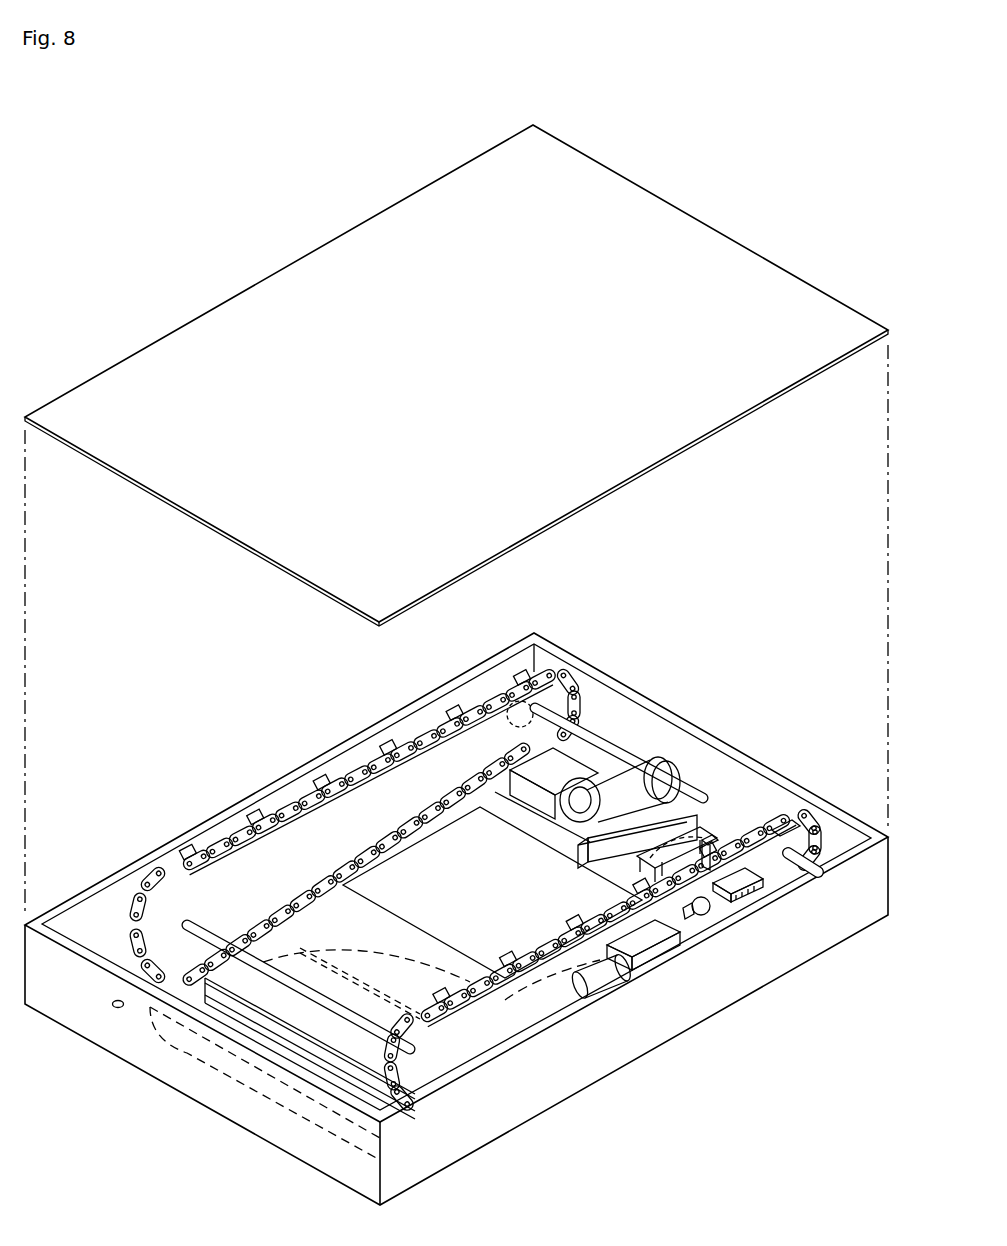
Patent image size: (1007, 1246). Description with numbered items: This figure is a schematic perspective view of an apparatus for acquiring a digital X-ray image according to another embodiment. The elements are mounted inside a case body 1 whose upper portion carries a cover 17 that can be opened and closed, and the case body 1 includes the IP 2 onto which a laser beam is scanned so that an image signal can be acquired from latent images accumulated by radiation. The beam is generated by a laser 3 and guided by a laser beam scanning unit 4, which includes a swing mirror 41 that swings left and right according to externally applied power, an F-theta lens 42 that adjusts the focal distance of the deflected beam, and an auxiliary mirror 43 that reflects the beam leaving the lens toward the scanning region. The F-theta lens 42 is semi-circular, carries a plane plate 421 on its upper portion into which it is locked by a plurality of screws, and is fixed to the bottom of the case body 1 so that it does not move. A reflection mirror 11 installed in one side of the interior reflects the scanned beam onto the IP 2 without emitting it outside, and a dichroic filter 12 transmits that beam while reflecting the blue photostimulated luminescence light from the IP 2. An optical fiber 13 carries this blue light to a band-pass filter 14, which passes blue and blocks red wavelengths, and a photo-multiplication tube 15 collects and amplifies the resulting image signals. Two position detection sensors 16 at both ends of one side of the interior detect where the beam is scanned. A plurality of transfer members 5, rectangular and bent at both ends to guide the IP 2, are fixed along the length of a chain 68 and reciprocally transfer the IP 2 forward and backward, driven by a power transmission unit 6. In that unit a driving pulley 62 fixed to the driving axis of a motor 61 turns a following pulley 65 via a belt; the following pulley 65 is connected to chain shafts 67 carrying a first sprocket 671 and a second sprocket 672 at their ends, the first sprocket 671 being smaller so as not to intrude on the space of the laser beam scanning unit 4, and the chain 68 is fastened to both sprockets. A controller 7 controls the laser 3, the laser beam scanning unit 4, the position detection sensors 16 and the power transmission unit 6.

The case body 1 is at (455, 1138).
The IP 2 is at (770, 880).
The laser 3 is at (700, 905).
The laser beam scanning unit 4 is at (698, 770).
The transfer member 5 is at (325, 786).
The power transmission unit 6 is at (599, 721).
The controller 7 is at (452, 840).
The reflection mirror 11 is at (280, 1098).
The dichroic filter 12 is at (237, 1015).
The optical fiber 13 is at (540, 1030).
The band-pass filter 14 is at (625, 990).
The photo-multiplication tube 15 is at (660, 960).
The position detection sensor 16 is at (110, 1010).
The cover 17 is at (672, 218).
The swing mirror 41 is at (795, 787).
The F-theta lens 42 is at (712, 850).
The auxiliary mirror 43 is at (695, 812).
The motor 61 is at (500, 700).
The driving pulley 62 is at (600, 790).
The following pulley 65 is at (660, 770).
The chain shaft 67 is at (613, 750).
The chain 68 is at (152, 885).
The plane plate 421 is at (717, 850).
The first sprocket 671 is at (790, 868).
The second sprocket 672 is at (475, 1060).